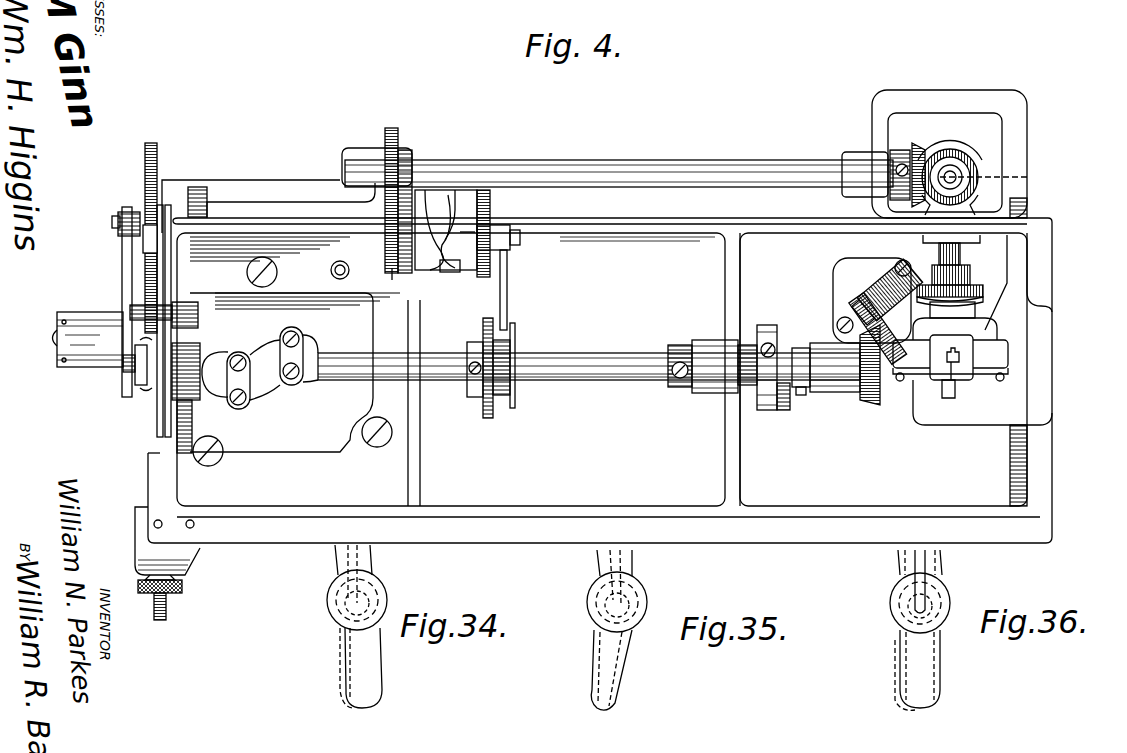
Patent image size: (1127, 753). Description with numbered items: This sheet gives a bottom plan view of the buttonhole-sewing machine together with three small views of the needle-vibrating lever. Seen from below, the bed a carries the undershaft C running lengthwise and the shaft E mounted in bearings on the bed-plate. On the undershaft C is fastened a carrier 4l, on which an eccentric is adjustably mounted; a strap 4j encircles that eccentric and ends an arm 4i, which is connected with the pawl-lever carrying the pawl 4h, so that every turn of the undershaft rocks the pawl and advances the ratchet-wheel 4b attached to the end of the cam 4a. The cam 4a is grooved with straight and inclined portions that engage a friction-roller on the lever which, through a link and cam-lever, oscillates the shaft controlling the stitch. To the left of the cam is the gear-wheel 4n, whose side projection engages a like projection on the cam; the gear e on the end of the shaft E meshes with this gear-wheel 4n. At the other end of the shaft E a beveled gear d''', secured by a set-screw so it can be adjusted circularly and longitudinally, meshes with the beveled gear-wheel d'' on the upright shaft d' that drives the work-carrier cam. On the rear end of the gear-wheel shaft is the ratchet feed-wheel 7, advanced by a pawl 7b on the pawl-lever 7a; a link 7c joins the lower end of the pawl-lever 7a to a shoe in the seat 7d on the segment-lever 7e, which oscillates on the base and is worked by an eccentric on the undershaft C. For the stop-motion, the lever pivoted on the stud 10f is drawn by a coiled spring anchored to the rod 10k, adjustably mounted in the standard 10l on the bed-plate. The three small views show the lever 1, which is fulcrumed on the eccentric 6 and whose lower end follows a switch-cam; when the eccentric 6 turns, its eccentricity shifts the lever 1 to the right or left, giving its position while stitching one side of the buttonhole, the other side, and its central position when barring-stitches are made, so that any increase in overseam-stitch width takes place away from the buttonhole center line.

In FIG. 4, the ratchet feed-wheel 7 is at (157, 154).
In FIG. 4, the pawl-lever 7a is at (134, 215).
In FIG. 4, the pawl 7b is at (152, 240).
In FIG. 4, the link 7c is at (124, 270).
In FIG. 4, the seat 7d is at (122, 372).
In FIG. 4, the segment-lever 7e is at (133, 385).
In FIG. 4, the stud 10f is at (55, 340).
In FIG. 4, the standard 10l is at (167, 541).
In FIG. 4, the rod 10k is at (160, 609).
In FIG. 4, the gear e is at (392, 128).
In FIG. 4, the ratchet-wheel 4b is at (480, 192).
In FIG. 4, the cam 4a is at (459, 232).
In FIG. 4, the pawl 4h is at (492, 247).
In FIG. 4, the gear-wheel 4n is at (392, 272).
In FIG. 4, the arm 4i is at (508, 293).
In FIG. 4, the strap 4j is at (505, 348).
In FIG. 4, the carrier 4l is at (488, 418).
In FIG. 4, the shaft E is at (619, 159).
In FIG. 4, the undershaft C is at (606, 356).
In FIG. 4, the bed a is at (682, 369).
In FIG. 4, the upright shaft d' is at (997, 177).
In FIG. 4, the beveled gear-wheel d'' is at (950, 153).
In FIG. 4, the beveled gear d''' is at (907, 162).
In FIG. 34, the eccentric 6 is at (378, 588).
In FIG. 35, the eccentric 6 is at (647, 600).
In FIG. 36, the eccentric 6 is at (900, 605).
In FIG. 34, the lever 1 is at (356, 650).
In FIG. 35, the lever 1 is at (598, 648).
In FIG. 36, the lever 1 is at (915, 665).